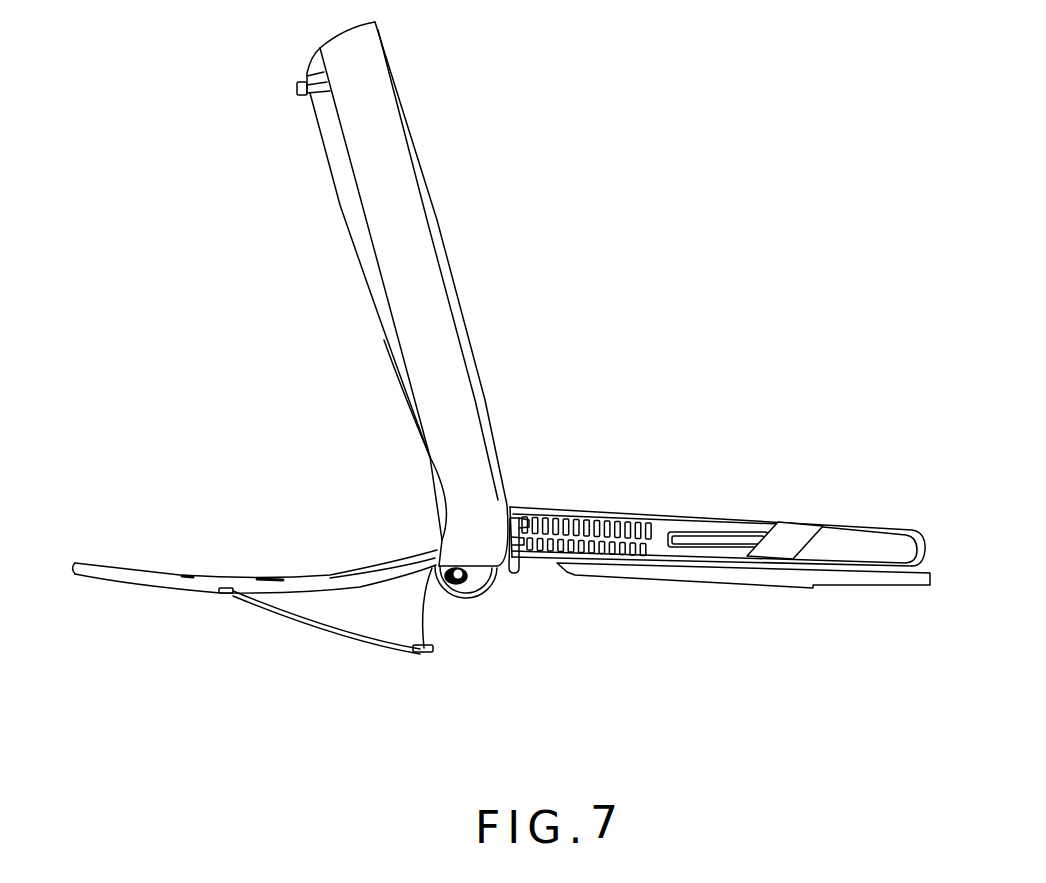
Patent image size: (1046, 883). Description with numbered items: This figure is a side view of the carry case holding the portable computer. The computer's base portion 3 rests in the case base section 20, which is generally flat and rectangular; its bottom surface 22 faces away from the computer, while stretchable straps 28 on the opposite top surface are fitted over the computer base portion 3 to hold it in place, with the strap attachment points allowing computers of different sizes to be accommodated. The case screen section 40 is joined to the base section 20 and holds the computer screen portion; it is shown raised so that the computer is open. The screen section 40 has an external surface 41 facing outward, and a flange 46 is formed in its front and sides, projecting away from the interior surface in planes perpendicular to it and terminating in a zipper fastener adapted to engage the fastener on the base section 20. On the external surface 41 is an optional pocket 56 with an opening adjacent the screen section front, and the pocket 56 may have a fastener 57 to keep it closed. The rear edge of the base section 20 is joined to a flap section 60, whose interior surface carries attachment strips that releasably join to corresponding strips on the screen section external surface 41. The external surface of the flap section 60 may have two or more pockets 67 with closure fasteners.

The base portion 3 is at (727, 528).
The base section 20 is at (895, 588).
The bottom surface 22 is at (547, 565).
The stretchable straps 28 is at (788, 543).
The screen section 40 is at (392, 260).
The external surface 41 is at (348, 233).
The flange 46 is at (432, 325).
The pocket 56 is at (335, 157).
The fastener 57 is at (296, 96).
The flap section 60 is at (212, 576).
The pockets 67 is at (363, 600).